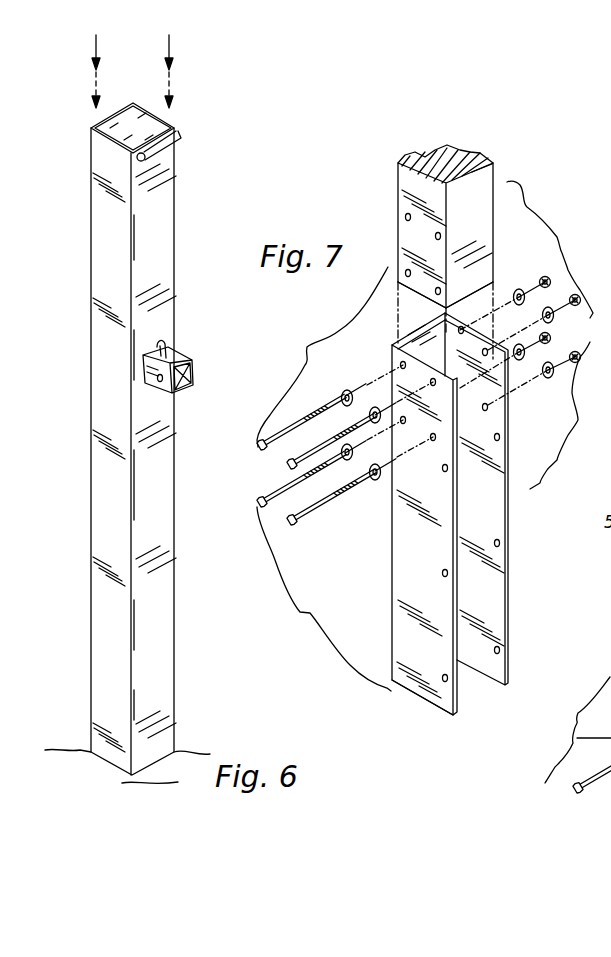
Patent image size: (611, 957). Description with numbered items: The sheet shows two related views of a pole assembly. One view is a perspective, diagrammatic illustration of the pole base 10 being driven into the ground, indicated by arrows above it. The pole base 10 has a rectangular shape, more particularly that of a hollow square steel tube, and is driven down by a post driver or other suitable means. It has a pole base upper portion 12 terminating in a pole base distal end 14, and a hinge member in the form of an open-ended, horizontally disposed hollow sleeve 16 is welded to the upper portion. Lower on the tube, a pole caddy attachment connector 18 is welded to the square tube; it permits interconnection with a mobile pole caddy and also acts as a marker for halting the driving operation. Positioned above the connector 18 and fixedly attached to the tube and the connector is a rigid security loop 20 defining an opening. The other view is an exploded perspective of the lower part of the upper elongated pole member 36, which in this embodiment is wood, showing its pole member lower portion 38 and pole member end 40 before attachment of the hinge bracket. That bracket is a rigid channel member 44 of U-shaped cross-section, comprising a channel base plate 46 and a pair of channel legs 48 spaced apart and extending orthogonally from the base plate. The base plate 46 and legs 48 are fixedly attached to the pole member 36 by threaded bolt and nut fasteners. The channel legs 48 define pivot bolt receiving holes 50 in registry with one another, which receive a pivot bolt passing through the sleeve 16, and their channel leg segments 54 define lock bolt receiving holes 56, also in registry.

In FIG. 6, the pole base 10 is at (133, 455).
In FIG. 6, the pole base upper portion 12 is at (158, 190).
In FIG. 6, the pole base distal end 14 is at (133, 104).
In FIG. 6, the hollow sleeve 16 is at (180, 140).
In FIG. 6, the pole caddy attachment connector 18 is at (189, 352).
In FIG. 6, the rigid security loop 20 is at (167, 338).
In FIG. 7, the upper elongated pole member 36 is at (444, 253).
In FIG. 7, the pole member lower portion 38 is at (412, 249).
In FIG. 7, the pole member end 40 is at (480, 297).
In FIG. 7, the rigid channel member 44 is at (453, 527).
In FIG. 7, the channel base plate 46 is at (432, 338).
In FIG. 7, the channel legs 48 is at (393, 503).
In FIG. 7, the pivot bolt receiving holes 50 is at (443, 469).
In FIG. 7, the channel leg segments 54 is at (427, 658).
In FIG. 7, the lock bolt receiving holes 56 is at (443, 572).